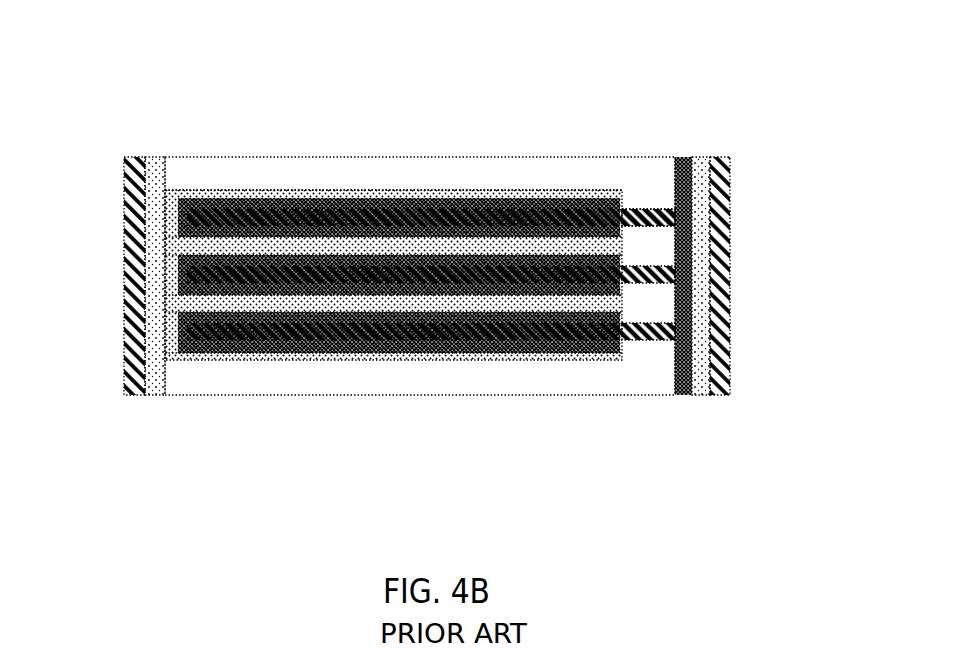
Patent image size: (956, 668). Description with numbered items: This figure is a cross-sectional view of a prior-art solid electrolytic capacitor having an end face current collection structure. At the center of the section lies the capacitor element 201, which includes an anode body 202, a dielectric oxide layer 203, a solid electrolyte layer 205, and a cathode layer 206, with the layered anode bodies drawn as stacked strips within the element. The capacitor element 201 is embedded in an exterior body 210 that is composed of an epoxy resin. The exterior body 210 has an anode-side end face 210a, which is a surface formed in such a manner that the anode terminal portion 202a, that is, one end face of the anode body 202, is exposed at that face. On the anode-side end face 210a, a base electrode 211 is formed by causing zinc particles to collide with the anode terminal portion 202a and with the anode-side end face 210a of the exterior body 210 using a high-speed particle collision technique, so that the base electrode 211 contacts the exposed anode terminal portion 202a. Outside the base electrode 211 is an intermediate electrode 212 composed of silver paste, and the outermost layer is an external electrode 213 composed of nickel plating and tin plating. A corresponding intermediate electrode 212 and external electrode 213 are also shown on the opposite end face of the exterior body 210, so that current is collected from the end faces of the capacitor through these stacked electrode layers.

The capacitor element 201 is at (420, 201).
The anode body 202 is at (356, 217).
The anode terminal portion 202a is at (676, 215).
The dielectric oxide layer 203 is at (418, 200).
The solid electrolyte layer 205 is at (475, 190).
The cathode layer 206 is at (315, 195).
The exterior body 210 is at (383, 378).
The anode-side end face 210a is at (678, 244).
The base electrode 211 is at (673, 373).
The intermediate electrode 212 is at (155, 377).
The external electrode 213 is at (132, 368).